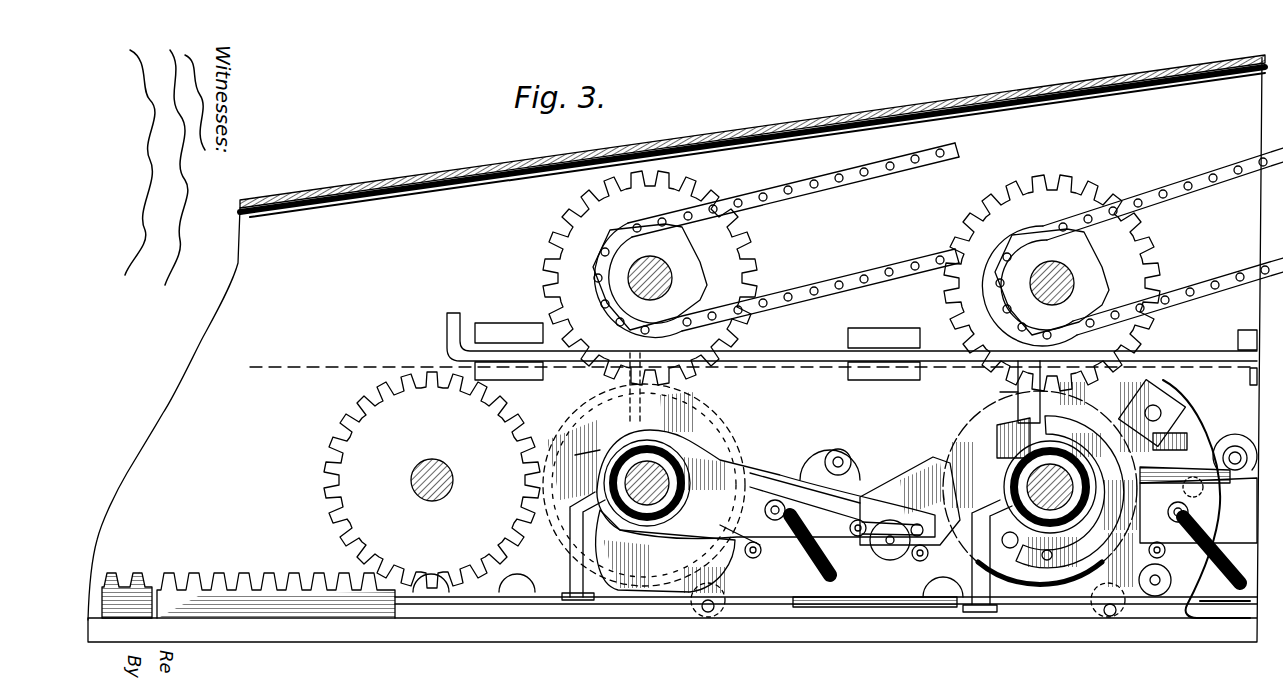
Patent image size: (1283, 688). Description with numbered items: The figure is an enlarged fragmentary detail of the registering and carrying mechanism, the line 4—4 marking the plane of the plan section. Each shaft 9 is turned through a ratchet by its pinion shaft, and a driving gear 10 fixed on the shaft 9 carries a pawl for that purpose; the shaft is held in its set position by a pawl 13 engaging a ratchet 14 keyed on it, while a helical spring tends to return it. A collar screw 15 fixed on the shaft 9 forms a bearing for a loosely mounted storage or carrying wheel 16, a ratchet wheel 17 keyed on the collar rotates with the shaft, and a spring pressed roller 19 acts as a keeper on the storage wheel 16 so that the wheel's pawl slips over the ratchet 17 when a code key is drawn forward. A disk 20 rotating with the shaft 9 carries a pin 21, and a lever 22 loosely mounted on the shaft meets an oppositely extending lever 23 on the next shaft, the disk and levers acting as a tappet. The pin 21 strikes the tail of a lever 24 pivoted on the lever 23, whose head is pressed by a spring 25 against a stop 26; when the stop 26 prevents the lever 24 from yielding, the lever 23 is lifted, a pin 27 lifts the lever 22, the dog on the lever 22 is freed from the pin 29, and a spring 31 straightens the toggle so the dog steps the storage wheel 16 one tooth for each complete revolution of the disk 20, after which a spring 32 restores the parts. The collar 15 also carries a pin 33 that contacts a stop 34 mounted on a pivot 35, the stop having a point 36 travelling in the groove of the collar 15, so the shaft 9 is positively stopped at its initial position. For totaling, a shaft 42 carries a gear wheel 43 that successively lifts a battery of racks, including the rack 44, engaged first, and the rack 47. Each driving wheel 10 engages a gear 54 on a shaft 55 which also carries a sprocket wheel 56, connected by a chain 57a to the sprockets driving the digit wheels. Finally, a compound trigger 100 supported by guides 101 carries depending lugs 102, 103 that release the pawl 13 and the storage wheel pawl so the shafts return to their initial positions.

The section line 4— 4 is at (263, 343).
The shaft 9 is at (741, 479).
The driving gear 10 is at (720, 428).
The pawl 13 is at (722, 574).
The ratchet 14 is at (647, 395).
The collar screw 15 is at (690, 478).
The storage or carrying wheel 16 is at (975, 445).
The ratchet wheel 17 is at (1050, 474).
The spring pressed wheel or roller 19 is at (1190, 396).
The disk 20 is at (740, 440).
The pin 21 is at (751, 539).
The lever 22 is at (978, 511).
The lever 23 is at (941, 580).
The lever 24 is at (796, 468).
The spring 25 is at (845, 449).
The pin or stop 26 is at (935, 480).
The pin 27 is at (1160, 537).
The pin 29 is at (913, 540).
The spring 31 is at (886, 515).
The spring 32 is at (1002, 539).
The pin 33 is at (987, 556).
The stop 34 is at (568, 540).
The pivot 35 is at (558, 565).
The point 36 is at (580, 458).
The shaft 42 is at (435, 459).
The gear wheel 43 is at (432, 480).
The rack 44 is at (192, 576).
The rack 47 is at (128, 573).
The gear 54 is at (752, 262).
The shaft 55 is at (672, 272).
The sprocket wheel 56 is at (690, 290).
The chain 57a is at (832, 190).
The compound trigger 100 is at (447, 333).
The guides 101 is at (508, 328).
The lug 102 is at (600, 378).
The lug 103 is at (1005, 395).